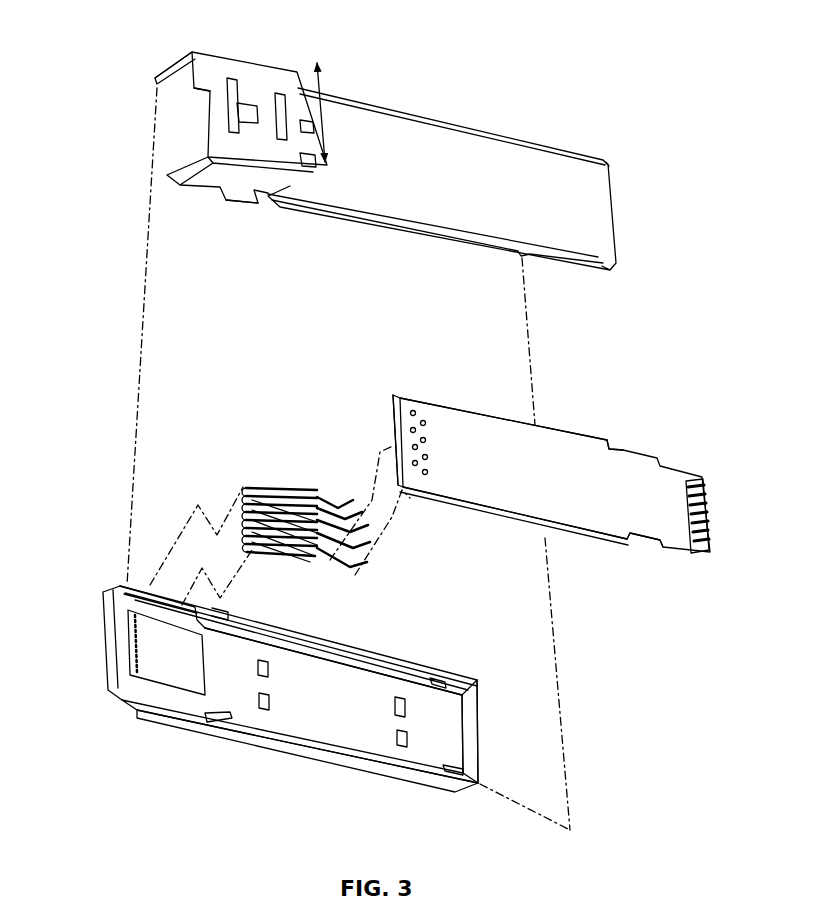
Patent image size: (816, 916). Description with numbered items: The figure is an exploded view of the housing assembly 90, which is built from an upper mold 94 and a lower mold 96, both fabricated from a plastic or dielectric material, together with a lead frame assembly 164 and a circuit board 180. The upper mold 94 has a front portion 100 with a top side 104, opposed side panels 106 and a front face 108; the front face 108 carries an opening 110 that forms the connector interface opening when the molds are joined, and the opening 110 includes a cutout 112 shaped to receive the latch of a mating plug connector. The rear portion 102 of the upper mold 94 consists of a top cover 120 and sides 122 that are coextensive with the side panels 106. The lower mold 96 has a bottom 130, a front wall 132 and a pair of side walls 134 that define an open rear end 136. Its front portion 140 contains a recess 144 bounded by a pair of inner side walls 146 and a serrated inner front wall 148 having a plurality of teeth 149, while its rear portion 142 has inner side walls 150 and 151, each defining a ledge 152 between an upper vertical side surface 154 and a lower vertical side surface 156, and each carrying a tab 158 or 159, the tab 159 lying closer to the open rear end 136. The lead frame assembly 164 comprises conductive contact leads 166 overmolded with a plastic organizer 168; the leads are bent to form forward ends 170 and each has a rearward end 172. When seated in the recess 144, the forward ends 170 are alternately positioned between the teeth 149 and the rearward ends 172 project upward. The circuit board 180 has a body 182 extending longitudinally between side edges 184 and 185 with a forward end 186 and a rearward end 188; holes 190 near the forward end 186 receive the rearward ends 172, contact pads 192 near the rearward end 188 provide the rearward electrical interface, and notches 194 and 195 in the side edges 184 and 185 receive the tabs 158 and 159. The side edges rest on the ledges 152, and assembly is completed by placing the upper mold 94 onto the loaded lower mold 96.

The housing assembly 90 is at (113, 73).
The upper mold 94 is at (382, 90).
The lower mold 96 is at (292, 758).
The front portion 100 is at (248, 55).
The rear portion 102 is at (510, 137).
The top side 104 is at (277, 93).
The side panels 106 is at (190, 53).
The front face 108 is at (160, 50).
The opening 110 is at (180, 115).
The cutout 112 is at (198, 110).
The top cover 120 is at (484, 198).
The sides 122 is at (440, 122).
The bottom 130 is at (321, 723).
The front wall 132 is at (103, 692).
The side walls 134 is at (368, 652).
The open rear end 136 is at (470, 702).
The front portion 140 is at (172, 722).
The rear portion 142 is at (288, 620).
The recess 144 is at (176, 668).
The inner side walls 146 is at (220, 617).
The serrated inner front wall 148 is at (143, 663).
The teeth 149 is at (130, 633).
The inner side wall 150 is at (406, 706).
The inner side wall 151 is at (384, 679).
The ledge 152 is at (307, 657).
The upper vertical side surface 154 is at (402, 668).
The lower vertical side surface 156 is at (345, 712).
The tab 158 is at (442, 678).
The tab 159 is at (458, 768).
The lead frame assembly 164 is at (272, 473).
The contact leads 166 is at (313, 485).
The organizer 168 is at (270, 560).
The forward ends 170 is at (250, 488).
The rearward end 172 is at (347, 500).
The circuit board 180 is at (573, 408).
The body 182 is at (546, 473).
The side edge 184 is at (523, 420).
The side edge 185 is at (507, 512).
The forward end 186 is at (393, 425).
The rearward end 188 is at (705, 477).
The holes 190 is at (425, 422).
The contact pads 192 is at (683, 497).
The notch 194 is at (618, 448).
The notch 195 is at (628, 542).